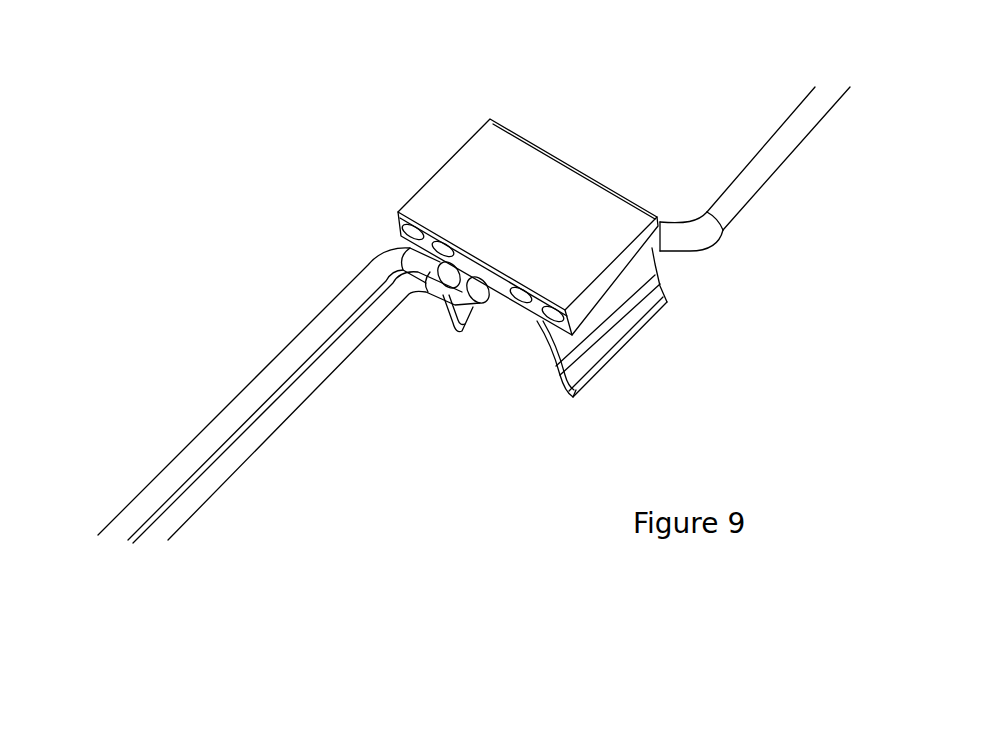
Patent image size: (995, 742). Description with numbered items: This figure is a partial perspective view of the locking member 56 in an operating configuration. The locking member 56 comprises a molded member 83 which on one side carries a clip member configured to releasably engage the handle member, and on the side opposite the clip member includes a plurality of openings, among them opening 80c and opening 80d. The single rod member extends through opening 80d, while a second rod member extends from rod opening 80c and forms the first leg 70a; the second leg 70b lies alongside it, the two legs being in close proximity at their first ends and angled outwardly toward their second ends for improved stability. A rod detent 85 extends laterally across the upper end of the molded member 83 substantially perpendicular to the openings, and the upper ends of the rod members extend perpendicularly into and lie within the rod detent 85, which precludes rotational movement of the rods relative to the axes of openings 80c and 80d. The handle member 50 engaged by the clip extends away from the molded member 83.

The tube 50 is at (763, 145).
The locking member 56 is at (541, 377).
The first leg 70a is at (262, 357).
The second leg 70b is at (312, 392).
The rod opening 80c is at (466, 262).
The opening 80d is at (495, 280).
The molded member 83 is at (430, 174).
The rod detent 85 is at (648, 243).